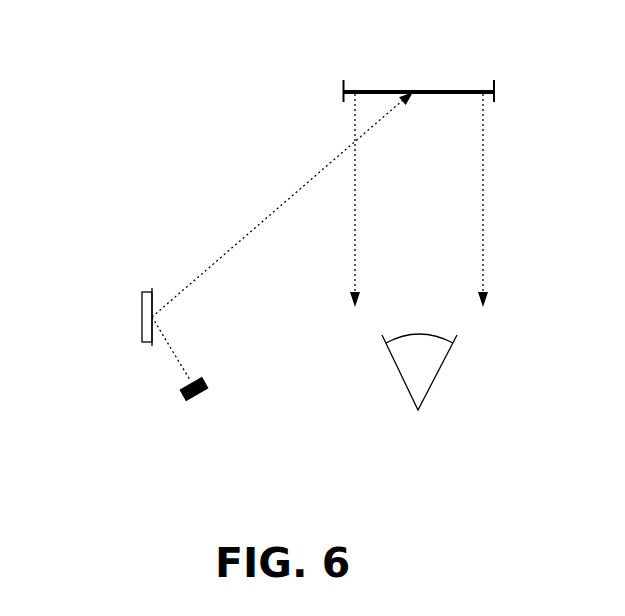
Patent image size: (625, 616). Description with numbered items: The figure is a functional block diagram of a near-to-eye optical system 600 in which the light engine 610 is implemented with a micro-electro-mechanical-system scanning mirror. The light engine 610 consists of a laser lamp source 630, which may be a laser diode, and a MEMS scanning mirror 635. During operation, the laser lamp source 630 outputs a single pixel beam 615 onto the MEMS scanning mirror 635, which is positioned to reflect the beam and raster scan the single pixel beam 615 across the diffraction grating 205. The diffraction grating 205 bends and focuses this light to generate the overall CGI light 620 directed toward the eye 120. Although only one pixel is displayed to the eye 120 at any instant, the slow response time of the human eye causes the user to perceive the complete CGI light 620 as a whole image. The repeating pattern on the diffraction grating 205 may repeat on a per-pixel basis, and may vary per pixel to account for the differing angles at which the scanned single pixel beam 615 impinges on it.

The near-to-eye optical system 600 is at (100, 68).
The light engine 610 is at (79, 264).
The diffraction grating 205 is at (467, 91).
The CGI light 620 is at (482, 245).
The single pixel beam 615 is at (297, 193).
The MEMS scanning mirror 635 is at (140, 318).
The laser lamp source 630 is at (203, 395).
The eye 120 is at (438, 373).